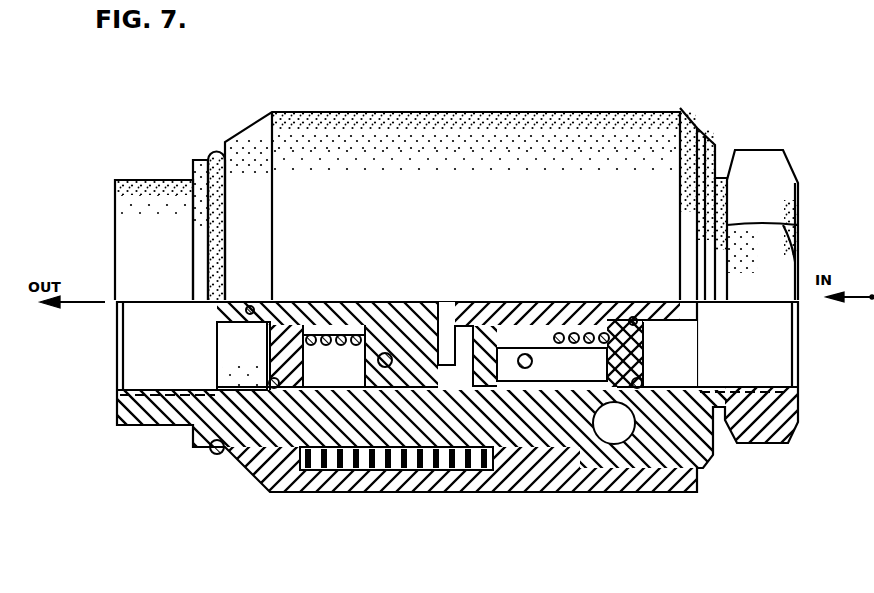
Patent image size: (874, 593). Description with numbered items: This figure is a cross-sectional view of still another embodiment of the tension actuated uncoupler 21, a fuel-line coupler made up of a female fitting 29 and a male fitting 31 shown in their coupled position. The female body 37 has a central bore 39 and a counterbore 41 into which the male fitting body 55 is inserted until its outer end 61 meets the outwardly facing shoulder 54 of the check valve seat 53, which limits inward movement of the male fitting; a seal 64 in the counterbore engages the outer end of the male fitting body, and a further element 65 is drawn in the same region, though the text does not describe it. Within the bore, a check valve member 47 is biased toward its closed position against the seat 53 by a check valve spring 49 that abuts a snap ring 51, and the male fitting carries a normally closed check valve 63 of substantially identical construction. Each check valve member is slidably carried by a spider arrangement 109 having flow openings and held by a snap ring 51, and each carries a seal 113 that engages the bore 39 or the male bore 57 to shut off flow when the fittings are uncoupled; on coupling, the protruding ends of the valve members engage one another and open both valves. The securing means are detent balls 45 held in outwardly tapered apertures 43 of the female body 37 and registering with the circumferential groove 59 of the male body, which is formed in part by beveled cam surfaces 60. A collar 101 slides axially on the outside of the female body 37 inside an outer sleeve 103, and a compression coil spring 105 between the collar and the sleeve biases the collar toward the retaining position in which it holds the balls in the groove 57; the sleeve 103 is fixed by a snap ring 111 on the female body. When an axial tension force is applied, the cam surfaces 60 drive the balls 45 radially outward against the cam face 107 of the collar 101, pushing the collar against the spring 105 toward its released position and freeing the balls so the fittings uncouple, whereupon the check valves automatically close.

The tension actuated uncoupler 21 is at (545, 97).
The female fitting 29 is at (193, 440).
The male fitting 31 is at (795, 437).
The female body 37 is at (300, 440).
The central bore 39 is at (252, 362).
The counterbore 41 is at (506, 430).
The apertures 43 is at (680, 470).
The detent balls 45 is at (608, 478).
The check valve member 47 is at (367, 325).
The check valve spring 49 is at (306, 335).
The snap ring 51 is at (279, 383).
The check valve seat 53 is at (425, 375).
The shoulder 54 is at (488, 400).
The male fitting body 55 is at (713, 447).
The groove 57 is at (778, 392).
The circumferential groove 59 is at (700, 382).
The cam surfaces 60 is at (659, 354).
The check valve member 61 is at (446, 330).
The check valve 63 is at (545, 330).
The seal 64 is at (548, 440).
The passage 65 is at (596, 437).
The collar 101 is at (497, 460).
The outer sleeve 103 is at (454, 170).
The compression coil spring 105 is at (420, 400).
The cam face 107 is at (636, 448).
The spider arrangement 109 is at (247, 308).
The snap ring 111 is at (216, 160).
The seal 113 is at (300, 470).